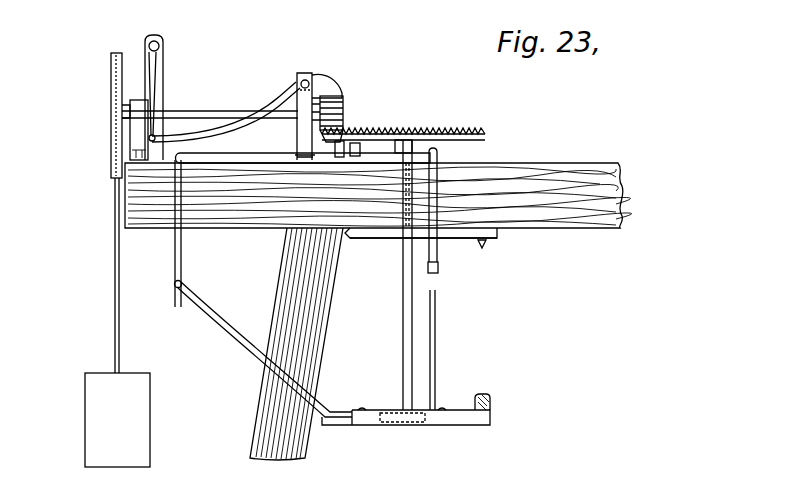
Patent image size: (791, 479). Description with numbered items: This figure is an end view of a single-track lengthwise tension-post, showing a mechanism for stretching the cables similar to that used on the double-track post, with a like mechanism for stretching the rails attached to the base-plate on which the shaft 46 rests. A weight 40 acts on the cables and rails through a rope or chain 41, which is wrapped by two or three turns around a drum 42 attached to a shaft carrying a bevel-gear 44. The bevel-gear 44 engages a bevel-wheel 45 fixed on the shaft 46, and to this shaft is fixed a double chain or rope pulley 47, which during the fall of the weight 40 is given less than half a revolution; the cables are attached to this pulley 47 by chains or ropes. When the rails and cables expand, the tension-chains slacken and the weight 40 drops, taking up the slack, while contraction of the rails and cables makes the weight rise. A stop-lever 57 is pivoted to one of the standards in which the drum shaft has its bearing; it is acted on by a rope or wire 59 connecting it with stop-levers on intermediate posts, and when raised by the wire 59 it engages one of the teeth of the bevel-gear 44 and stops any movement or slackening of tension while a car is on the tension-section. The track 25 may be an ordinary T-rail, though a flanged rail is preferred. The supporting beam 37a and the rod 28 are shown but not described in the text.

The track 25 is at (490, 401).
The vertical rod 28 is at (450, 313).
The supporting beam 37a is at (378, 184).
The weight 40 is at (102, 420).
The rope or chain 41 is at (112, 273).
The drum 42 is at (110, 80).
The bevel-gear 44 is at (338, 112).
The bevel-wheel 45 is at (437, 111).
The shaft 46 is at (403, 323).
The double chain or rope pulley 47 is at (393, 427).
The stop-lever 57 is at (283, 92).
The rope or wire 59 is at (158, 90).